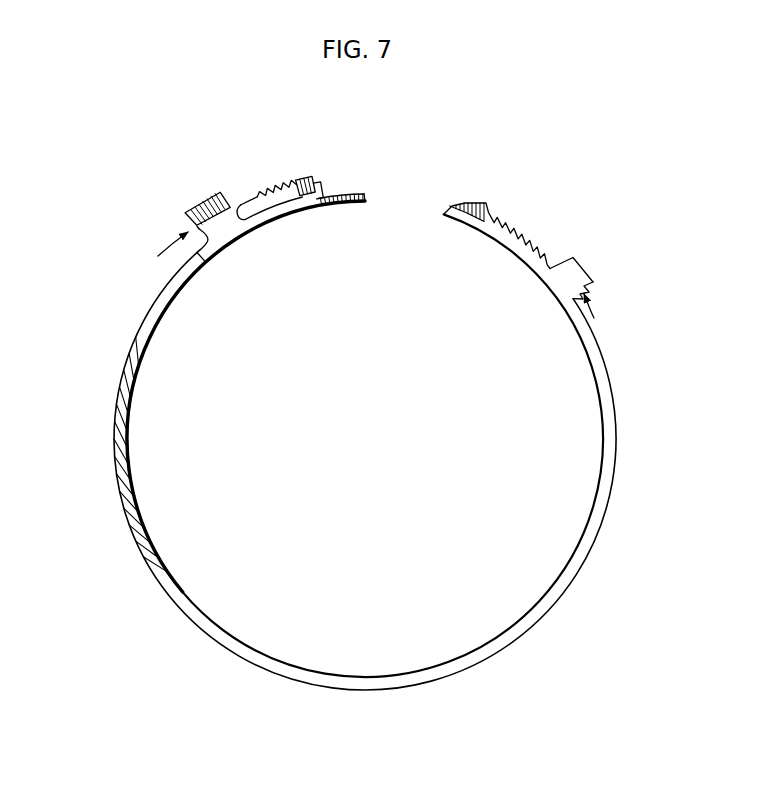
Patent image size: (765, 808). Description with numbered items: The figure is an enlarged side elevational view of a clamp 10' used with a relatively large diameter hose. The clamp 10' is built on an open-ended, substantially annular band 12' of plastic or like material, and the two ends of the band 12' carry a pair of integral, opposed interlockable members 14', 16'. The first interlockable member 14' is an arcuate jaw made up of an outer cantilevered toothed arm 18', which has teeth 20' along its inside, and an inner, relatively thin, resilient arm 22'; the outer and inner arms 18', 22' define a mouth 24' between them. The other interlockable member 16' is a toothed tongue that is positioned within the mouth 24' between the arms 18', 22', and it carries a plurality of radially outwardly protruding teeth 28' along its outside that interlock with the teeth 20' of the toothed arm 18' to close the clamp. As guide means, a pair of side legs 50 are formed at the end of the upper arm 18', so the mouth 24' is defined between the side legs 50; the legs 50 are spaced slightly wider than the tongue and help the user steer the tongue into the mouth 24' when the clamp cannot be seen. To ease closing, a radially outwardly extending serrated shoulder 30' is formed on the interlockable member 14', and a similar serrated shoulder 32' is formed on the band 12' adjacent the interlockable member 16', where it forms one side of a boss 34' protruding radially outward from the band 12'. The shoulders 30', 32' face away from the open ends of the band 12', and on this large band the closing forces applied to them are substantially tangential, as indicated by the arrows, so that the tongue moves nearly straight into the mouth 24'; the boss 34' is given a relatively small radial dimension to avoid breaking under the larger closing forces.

The clamp 10' is at (339, 470).
The band 12' is at (365, 439).
The first interlockable member 14' is at (291, 165).
The second interlockable member 16' is at (516, 232).
The outer cantilevered toothed arm 18' is at (332, 160).
The teeth 20' is at (269, 231).
The inner resilient arm 22' is at (311, 236).
The mouth 24' is at (347, 188).
The teeth 28' is at (494, 202).
The serrated shoulder 30' is at (171, 224).
The serrated shoulder 32' is at (614, 301).
The boss 34' is at (599, 261).
The side legs 50 is at (321, 182).